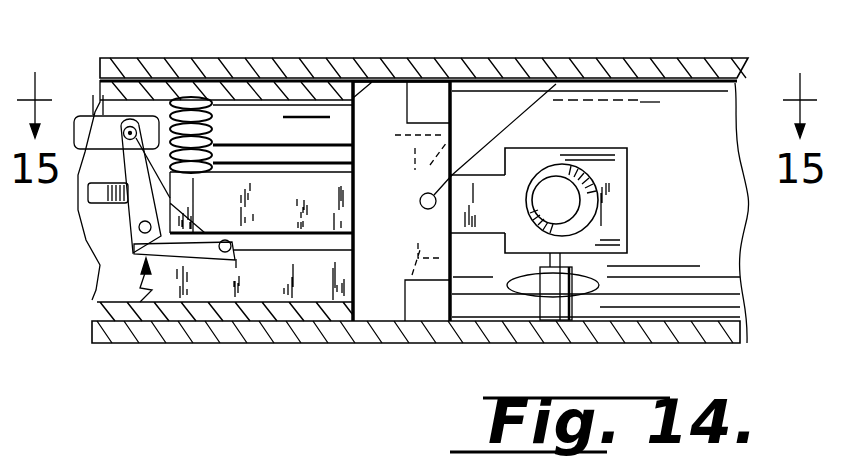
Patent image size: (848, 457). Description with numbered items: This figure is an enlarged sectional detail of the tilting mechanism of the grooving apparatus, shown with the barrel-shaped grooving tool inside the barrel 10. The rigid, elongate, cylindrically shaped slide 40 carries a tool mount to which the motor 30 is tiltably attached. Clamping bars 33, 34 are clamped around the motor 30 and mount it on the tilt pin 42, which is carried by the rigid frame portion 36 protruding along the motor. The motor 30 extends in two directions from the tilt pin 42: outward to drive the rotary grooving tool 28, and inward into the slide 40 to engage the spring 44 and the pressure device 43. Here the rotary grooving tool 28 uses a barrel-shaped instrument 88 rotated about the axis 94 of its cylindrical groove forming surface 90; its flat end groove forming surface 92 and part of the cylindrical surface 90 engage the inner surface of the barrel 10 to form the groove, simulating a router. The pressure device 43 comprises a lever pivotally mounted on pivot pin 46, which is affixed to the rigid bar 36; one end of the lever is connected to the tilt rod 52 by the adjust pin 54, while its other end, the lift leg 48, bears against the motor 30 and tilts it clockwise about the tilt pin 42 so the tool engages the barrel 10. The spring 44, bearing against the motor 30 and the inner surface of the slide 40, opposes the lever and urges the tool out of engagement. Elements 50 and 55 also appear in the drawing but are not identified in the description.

The barrel 10 is at (333, 80).
The rotary grooving tool 28 is at (552, 207).
The motor 30 is at (323, 217).
The clamping bar 33 is at (489, 72).
The clamping bar 34 is at (383, 320).
The rigid frame portion 36 is at (293, 140).
The slide 40 is at (270, 92).
The tilt pin 42 is at (556, 84).
The pressure device 43 is at (140, 302).
The spring 44 is at (196, 127).
The pivot pin 46 is at (139, 228).
The lift leg 48 is at (222, 256).
The link 50 is at (216, 248).
The tilt rod 52 is at (90, 125).
The adjust pin 54 is at (132, 128).
The slot 55 is at (105, 194).
The barrel-shaped instrument 88 is at (555, 275).
The cylindrical groove forming surface 90 is at (572, 305).
The flat end groove forming surface 92 is at (557, 300).
The axis of rotation 94 is at (583, 277).